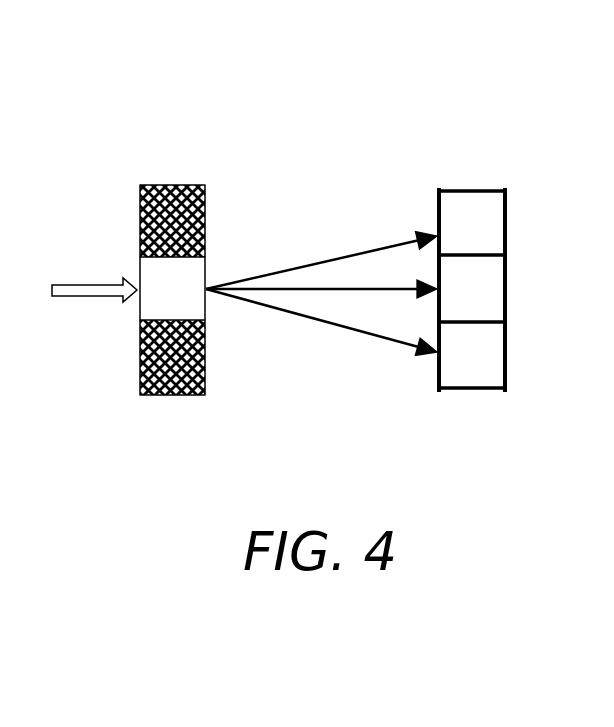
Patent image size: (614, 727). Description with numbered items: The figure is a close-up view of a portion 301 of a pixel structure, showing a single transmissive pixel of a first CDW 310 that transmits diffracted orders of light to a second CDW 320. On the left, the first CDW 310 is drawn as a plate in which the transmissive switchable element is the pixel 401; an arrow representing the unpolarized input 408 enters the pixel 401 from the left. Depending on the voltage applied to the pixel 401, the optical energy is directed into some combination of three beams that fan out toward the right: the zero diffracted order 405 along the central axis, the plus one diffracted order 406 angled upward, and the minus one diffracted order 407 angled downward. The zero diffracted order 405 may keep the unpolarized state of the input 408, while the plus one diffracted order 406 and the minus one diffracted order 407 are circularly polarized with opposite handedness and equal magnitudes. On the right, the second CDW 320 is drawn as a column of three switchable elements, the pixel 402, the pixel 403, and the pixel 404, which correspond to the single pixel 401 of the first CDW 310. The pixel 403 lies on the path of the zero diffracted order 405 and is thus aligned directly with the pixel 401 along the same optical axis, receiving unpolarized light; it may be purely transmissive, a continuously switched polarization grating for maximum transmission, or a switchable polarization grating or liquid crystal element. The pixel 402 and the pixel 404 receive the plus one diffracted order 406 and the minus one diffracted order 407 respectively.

The portion of the pixel structure 301 is at (316, 125).
The first CDW 310 is at (170, 398).
The second CDW 320 is at (477, 392).
The pixel 401 is at (140, 313).
The pixel 402 is at (493, 218).
The pixel 403 is at (493, 290).
The pixel 404 is at (493, 363).
The zero diffracted order 405 is at (368, 293).
The plus one diffracted order 406 is at (337, 255).
The minus one diffracted order 407 is at (327, 325).
The input 408 is at (74, 280).